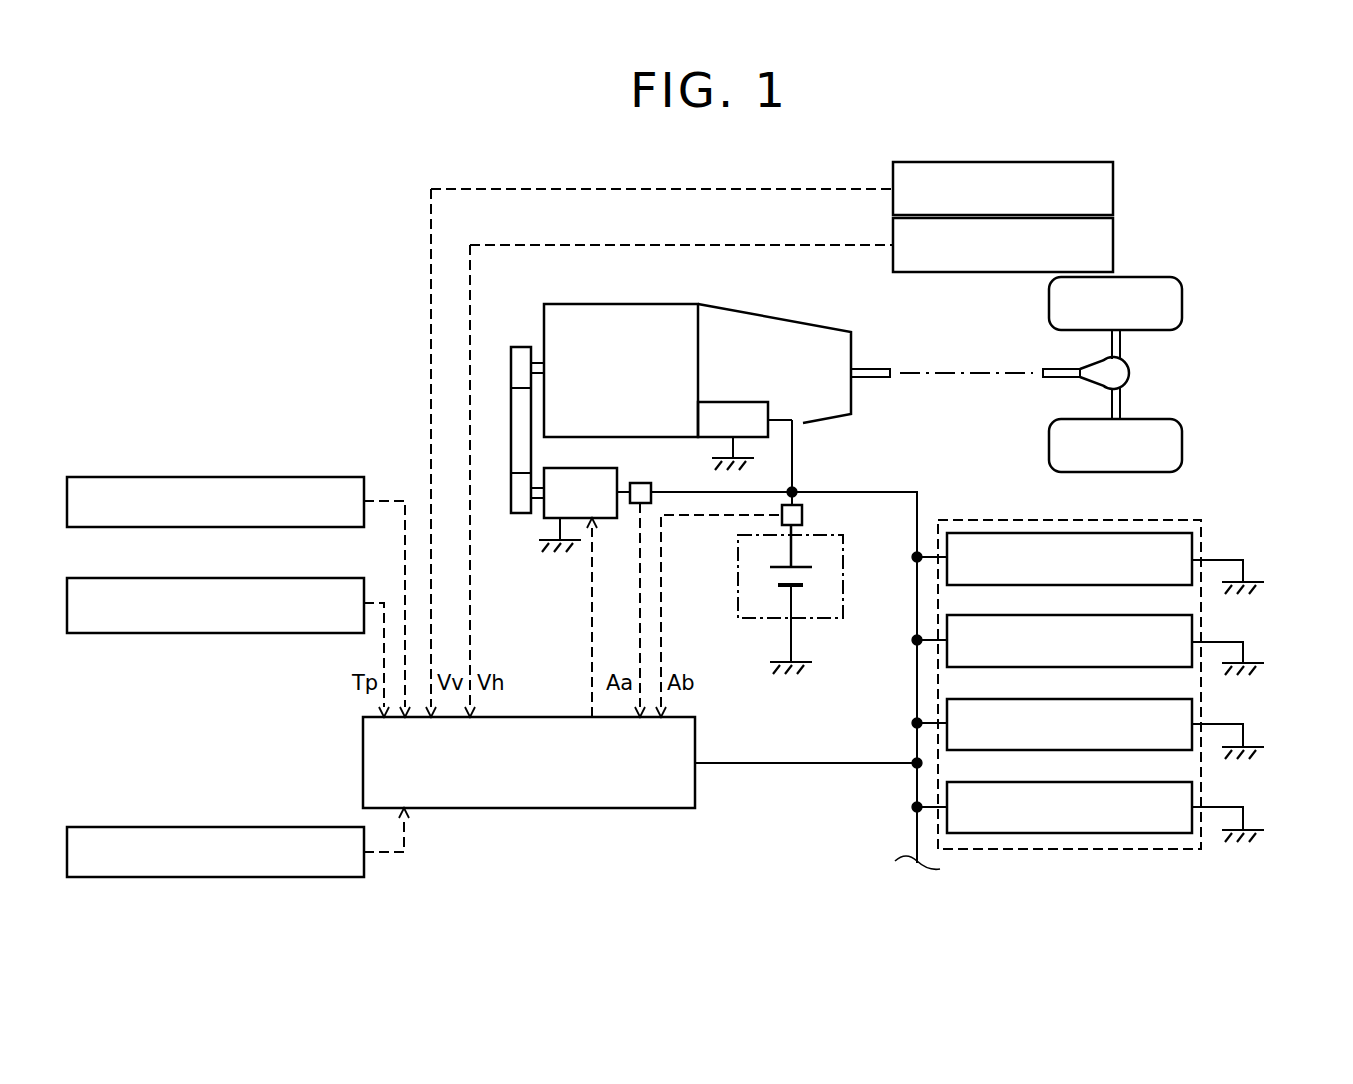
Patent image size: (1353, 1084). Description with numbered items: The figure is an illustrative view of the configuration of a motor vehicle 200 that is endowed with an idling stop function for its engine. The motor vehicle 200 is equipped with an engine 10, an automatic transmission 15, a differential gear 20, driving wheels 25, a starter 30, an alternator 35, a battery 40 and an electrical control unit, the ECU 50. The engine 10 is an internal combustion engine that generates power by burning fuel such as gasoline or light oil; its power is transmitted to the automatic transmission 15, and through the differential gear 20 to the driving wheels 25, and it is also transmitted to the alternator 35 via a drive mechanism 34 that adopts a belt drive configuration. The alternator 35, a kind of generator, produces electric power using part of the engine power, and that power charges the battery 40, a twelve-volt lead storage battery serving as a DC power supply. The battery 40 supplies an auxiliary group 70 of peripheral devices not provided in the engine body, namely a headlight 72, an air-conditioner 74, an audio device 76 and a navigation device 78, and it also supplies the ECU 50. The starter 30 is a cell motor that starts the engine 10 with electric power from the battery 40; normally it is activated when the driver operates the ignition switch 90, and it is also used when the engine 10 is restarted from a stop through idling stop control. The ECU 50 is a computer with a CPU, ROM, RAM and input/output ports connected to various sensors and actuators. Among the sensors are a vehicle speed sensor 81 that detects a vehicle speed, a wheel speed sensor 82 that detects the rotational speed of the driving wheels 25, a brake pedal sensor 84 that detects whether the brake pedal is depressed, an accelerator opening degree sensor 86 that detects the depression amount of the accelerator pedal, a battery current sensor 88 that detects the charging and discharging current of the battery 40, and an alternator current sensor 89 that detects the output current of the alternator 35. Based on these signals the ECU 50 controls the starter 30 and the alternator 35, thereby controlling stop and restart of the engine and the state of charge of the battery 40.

The motor vehicle 200 is at (1194, 162).
The engine 10 is at (566, 304).
The automatic transmission 15 is at (772, 318).
The differential gear 20 is at (1128, 373).
The driving wheels 25 is at (1224, 453).
The starter 30 is at (725, 402).
The drive mechanism 34 is at (511, 430).
The alternator 35 is at (573, 468).
The battery 40 is at (843, 578).
The ECU 50 is at (548, 717).
The auxiliary group 70 is at (977, 520).
The headlight 72 is at (1192, 548).
The air-conditioner 74 is at (1192, 632).
The audio device 76 is at (1192, 713).
The navigation device 78 is at (1192, 797).
The vehicle speed sensor 81 is at (1113, 189).
The wheel speed sensor 82 is at (1113, 245).
The brake pedal sensor 84 is at (98, 477).
The accelerator opening degree sensor 86 is at (98, 578).
The battery current sensor 88 is at (802, 514).
The alternator current sensor 89 is at (640, 483).
The ignition switch 90 is at (98, 827).